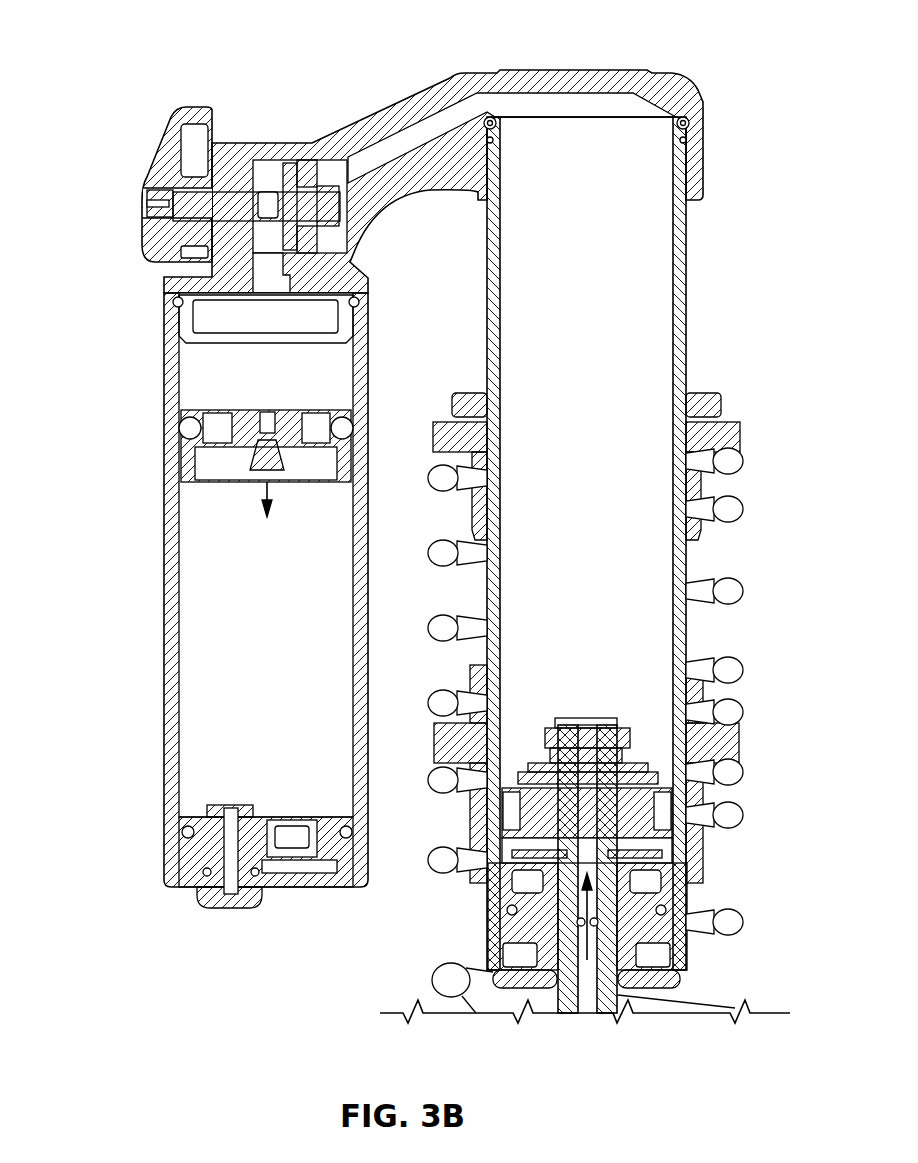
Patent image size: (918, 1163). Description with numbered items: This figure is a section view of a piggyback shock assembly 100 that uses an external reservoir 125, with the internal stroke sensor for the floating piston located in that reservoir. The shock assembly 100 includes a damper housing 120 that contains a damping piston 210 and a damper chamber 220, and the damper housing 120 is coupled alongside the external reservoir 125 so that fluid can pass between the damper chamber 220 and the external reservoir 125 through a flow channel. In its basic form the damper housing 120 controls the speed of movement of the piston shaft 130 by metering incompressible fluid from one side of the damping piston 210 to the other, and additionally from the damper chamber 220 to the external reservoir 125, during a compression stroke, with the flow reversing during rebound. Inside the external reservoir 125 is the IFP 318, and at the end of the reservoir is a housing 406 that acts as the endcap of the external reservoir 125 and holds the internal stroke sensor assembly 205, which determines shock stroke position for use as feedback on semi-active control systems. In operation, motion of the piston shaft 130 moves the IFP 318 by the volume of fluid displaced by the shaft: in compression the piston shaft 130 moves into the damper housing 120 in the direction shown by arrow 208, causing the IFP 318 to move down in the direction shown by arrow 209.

The shock assembly 100 is at (207, 34).
The damper housing 120 is at (687, 268).
The damper chamber 220 is at (645, 327).
The external reservoir 125 is at (164, 613).
The IFP 318 is at (187, 443).
The arrow 209 is at (257, 488).
The internal stroke sensor assembly 205 is at (102, 908).
The housing 406 is at (170, 852).
The damping piston 210 is at (652, 798).
The arrow 208 is at (630, 912).
The piston shaft 130 is at (596, 1013).